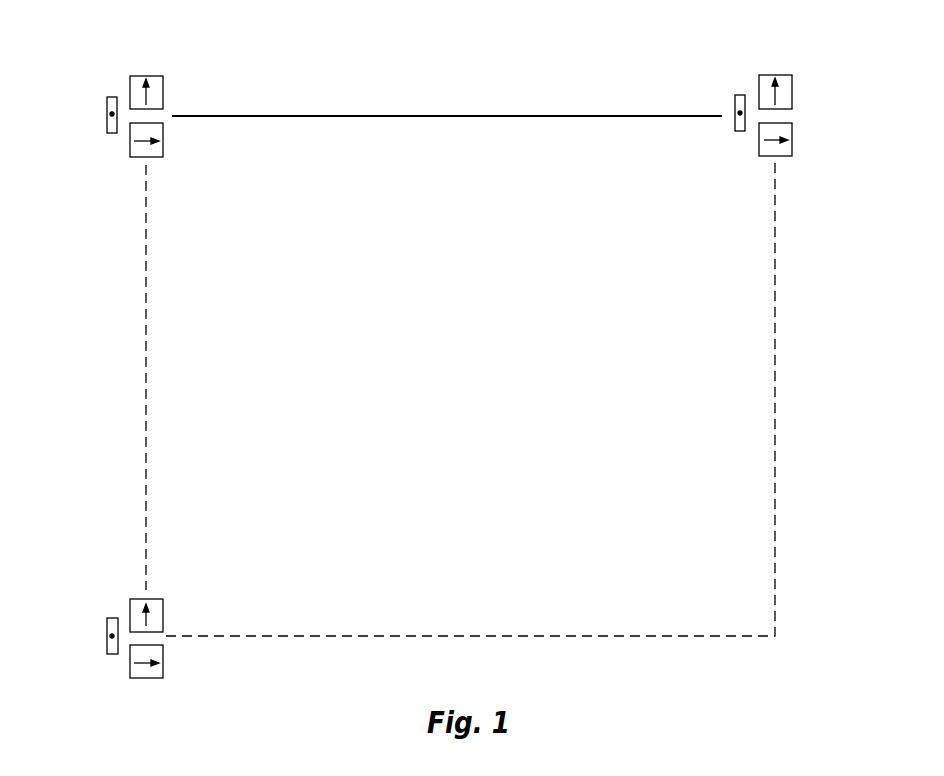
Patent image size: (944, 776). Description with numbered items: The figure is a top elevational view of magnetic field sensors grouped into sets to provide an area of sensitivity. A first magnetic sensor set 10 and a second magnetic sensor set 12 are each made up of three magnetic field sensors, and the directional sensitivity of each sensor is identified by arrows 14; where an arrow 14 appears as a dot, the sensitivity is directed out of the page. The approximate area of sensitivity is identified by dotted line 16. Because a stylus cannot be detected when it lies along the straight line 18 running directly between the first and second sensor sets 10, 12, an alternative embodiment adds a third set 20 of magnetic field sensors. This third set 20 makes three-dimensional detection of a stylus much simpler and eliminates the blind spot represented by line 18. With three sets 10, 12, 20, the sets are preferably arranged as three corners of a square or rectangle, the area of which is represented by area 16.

The first magnetic sensor set 10 is at (88, 75).
The second magnetic sensor set 12 is at (800, 66).
The arrows 14 is at (447, 370).
The dotted line 16 is at (775, 387).
The straight line 18 is at (440, 115).
The third set 20 is at (106, 604).